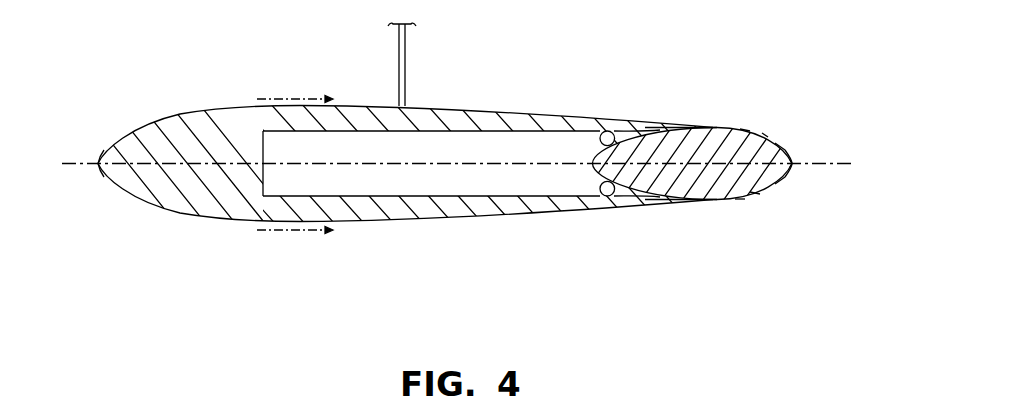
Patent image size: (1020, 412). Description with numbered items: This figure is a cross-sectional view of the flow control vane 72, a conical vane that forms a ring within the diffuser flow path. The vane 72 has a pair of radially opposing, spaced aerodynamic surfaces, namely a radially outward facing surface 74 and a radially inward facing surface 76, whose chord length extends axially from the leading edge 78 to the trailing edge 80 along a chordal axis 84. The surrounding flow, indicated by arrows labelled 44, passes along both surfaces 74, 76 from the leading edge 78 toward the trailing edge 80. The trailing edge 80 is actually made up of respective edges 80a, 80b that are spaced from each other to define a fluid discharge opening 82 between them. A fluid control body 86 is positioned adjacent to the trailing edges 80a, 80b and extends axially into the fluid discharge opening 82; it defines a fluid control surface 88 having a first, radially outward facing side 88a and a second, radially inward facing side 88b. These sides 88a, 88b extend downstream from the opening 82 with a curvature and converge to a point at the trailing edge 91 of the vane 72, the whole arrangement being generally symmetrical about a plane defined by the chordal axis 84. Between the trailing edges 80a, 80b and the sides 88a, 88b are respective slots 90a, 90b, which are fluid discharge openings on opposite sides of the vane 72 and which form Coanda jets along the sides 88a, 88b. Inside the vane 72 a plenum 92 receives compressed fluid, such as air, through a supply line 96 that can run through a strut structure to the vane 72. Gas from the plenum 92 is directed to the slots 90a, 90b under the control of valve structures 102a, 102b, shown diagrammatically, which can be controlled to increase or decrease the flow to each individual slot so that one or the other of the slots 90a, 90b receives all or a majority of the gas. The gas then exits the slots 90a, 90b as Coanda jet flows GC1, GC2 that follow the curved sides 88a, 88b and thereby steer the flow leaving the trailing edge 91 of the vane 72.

The flow control vane 72 is at (384, 159).
The radially outward facing surface 74 is at (368, 105).
The radially inward facing surface 76 is at (395, 223).
The leading edge 78 is at (93, 163).
The airflow 44 is at (285, 95).
The chordal axis 84 is at (440, 163).
The plenum 92 is at (437, 182).
The supply line 96 is at (406, 62).
The trailing edge 80 is at (719, 115).
The trailing edge of radially outward facing surface 80a is at (707, 127).
The trailing edge of radially inward facing surface 80b is at (707, 200).
The fluid discharge opening 82 is at (739, 199).
The fluid control body 86 is at (797, 171).
The fluid control surface 88 is at (765, 135).
The radially outward facing side 88a is at (745, 129).
The radially inward facing side 88b is at (755, 193).
The slot 90a is at (660, 127).
The slot 90b is at (660, 200).
The trailing edge 91 is at (793, 164).
The valve structure 102a is at (598, 135).
The valve structure 102b is at (583, 190).
The Coanda jet flow GC1 is at (782, 149).
The Coanda jet flow GC2 is at (782, 183).